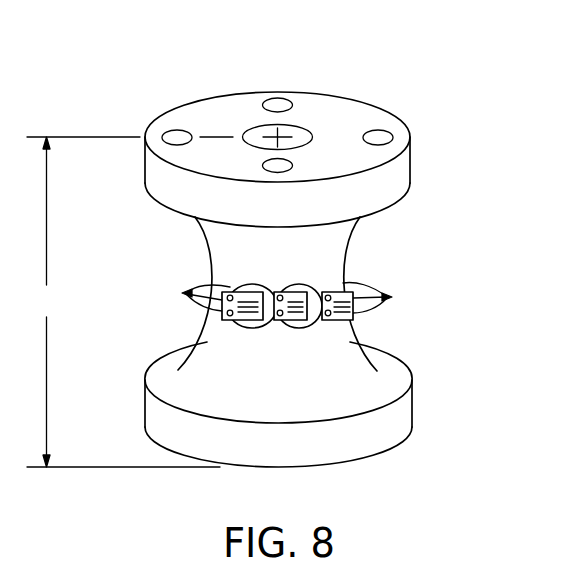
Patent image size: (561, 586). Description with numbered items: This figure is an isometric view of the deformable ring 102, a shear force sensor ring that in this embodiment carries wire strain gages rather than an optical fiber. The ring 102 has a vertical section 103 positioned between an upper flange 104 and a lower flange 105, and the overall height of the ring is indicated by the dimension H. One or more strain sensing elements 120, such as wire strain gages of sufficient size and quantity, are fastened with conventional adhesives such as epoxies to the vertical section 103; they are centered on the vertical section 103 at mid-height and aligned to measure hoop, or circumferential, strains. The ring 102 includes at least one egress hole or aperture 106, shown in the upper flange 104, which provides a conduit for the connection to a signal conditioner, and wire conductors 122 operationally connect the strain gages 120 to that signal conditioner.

The deformable ring 102 is at (418, 89).
The vertical section 103 is at (360, 222).
The upper flange 104 is at (412, 178).
The lower flange 105 is at (412, 405).
The egress hole or aperture 106 is at (392, 139).
The strain sensing elements 120 is at (350, 320).
The wire conductors 122 is at (117, 113).
The height dimension H is at (123, 302).